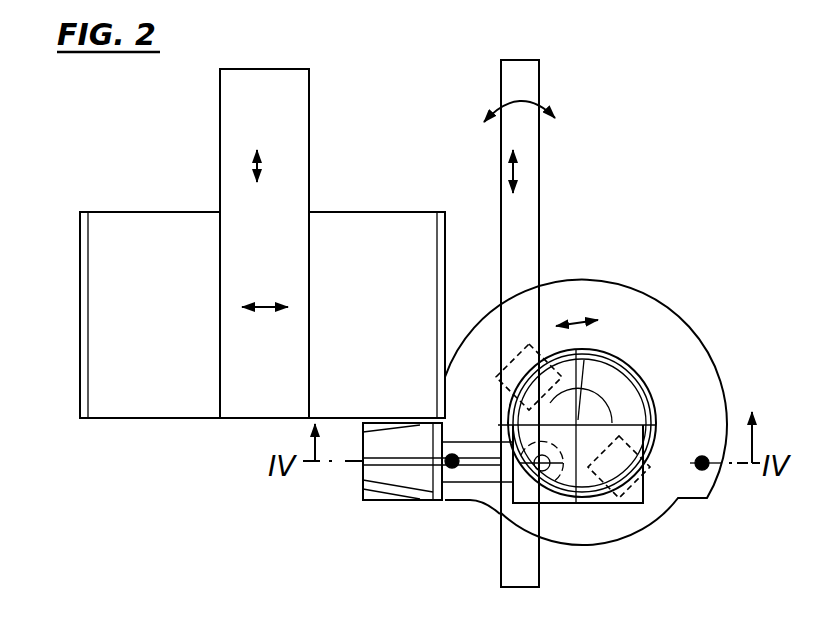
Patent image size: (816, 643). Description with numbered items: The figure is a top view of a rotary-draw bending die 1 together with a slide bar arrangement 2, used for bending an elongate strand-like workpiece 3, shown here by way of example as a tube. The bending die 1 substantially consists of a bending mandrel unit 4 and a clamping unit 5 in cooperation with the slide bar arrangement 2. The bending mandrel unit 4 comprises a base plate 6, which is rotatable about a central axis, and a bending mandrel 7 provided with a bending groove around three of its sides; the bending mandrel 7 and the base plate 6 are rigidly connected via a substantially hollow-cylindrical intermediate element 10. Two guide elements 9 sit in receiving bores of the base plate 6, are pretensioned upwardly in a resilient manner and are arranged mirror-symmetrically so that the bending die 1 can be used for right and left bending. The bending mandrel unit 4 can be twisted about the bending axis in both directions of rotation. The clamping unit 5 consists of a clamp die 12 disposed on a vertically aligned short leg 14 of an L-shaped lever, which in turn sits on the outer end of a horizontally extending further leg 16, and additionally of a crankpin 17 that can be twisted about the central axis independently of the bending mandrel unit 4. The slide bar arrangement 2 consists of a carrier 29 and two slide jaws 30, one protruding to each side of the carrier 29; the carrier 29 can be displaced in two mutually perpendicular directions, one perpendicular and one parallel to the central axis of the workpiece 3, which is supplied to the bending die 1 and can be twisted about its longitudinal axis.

The rotary-draw bending die 1 is at (215, 542).
The slide bar arrangement 2 is at (262, 243).
The workpiece 3 is at (527, 212).
The bending mandrel unit 4 is at (589, 391).
The clamping unit 5 is at (480, 404).
The base plate 6 is at (588, 296).
The bending mandrel 7 is at (540, 506).
The guide elements 9 is at (455, 454).
The intermediate element 10 is at (615, 366).
The clamp die 12 is at (412, 482).
The short leg 14 is at (372, 494).
The further leg 16 is at (470, 480).
The crankpin 17 is at (592, 478).
The carrier 29 is at (281, 258).
The slide jaws 30 is at (163, 318).